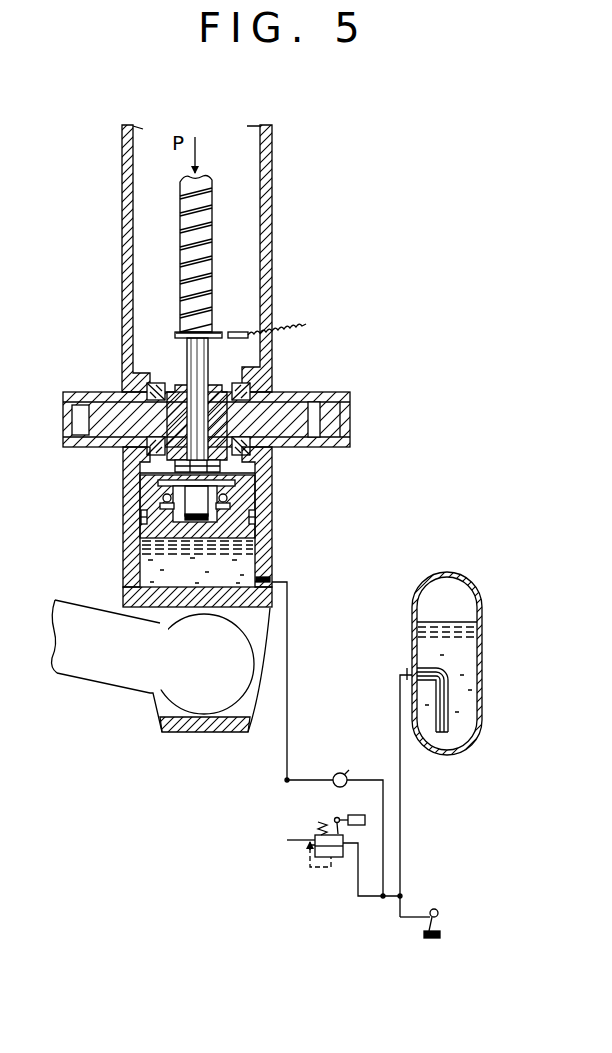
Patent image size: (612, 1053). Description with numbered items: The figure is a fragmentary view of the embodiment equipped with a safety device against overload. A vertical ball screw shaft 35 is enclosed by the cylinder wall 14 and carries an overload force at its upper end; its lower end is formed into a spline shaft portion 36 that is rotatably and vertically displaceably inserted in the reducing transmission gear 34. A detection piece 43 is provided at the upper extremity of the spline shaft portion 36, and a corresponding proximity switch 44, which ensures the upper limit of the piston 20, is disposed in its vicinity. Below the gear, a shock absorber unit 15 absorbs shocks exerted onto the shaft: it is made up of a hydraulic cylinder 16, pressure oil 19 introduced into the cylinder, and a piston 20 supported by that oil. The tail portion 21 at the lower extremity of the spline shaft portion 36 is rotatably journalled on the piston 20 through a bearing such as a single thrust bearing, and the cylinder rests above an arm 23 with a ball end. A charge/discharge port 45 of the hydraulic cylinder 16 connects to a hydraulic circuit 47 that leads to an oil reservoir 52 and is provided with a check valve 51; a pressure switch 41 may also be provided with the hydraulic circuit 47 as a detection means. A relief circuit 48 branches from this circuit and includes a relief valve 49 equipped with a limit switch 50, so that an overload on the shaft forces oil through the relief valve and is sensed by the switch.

The cylinder wall 14 is at (122, 235).
The shock absorber unit 15 is at (122, 562).
The hydraulic cylinder 16 is at (276, 532).
The pressure oil 19 is at (148, 575).
The piston 20 is at (248, 500).
The tail portion 21 is at (188, 508).
The arm with ball joint 23 is at (115, 667).
The reducing transmission gear 34 is at (102, 425).
The ball screw shaft 35 is at (213, 210).
The spline shaft portion 36 is at (192, 363).
The pressure switch 41 is at (440, 928).
The detection piece 43 is at (218, 324).
The proximity switch 44 is at (240, 332).
The charge/discharge port 45 is at (262, 578).
The hydraulic circuit 47 is at (400, 803).
The relief circuit 48 is at (295, 845).
The relief valve 49 is at (338, 857).
The limit switch 50 is at (357, 815).
The check valve 51 is at (342, 775).
The oil reservoir 52 is at (482, 707).